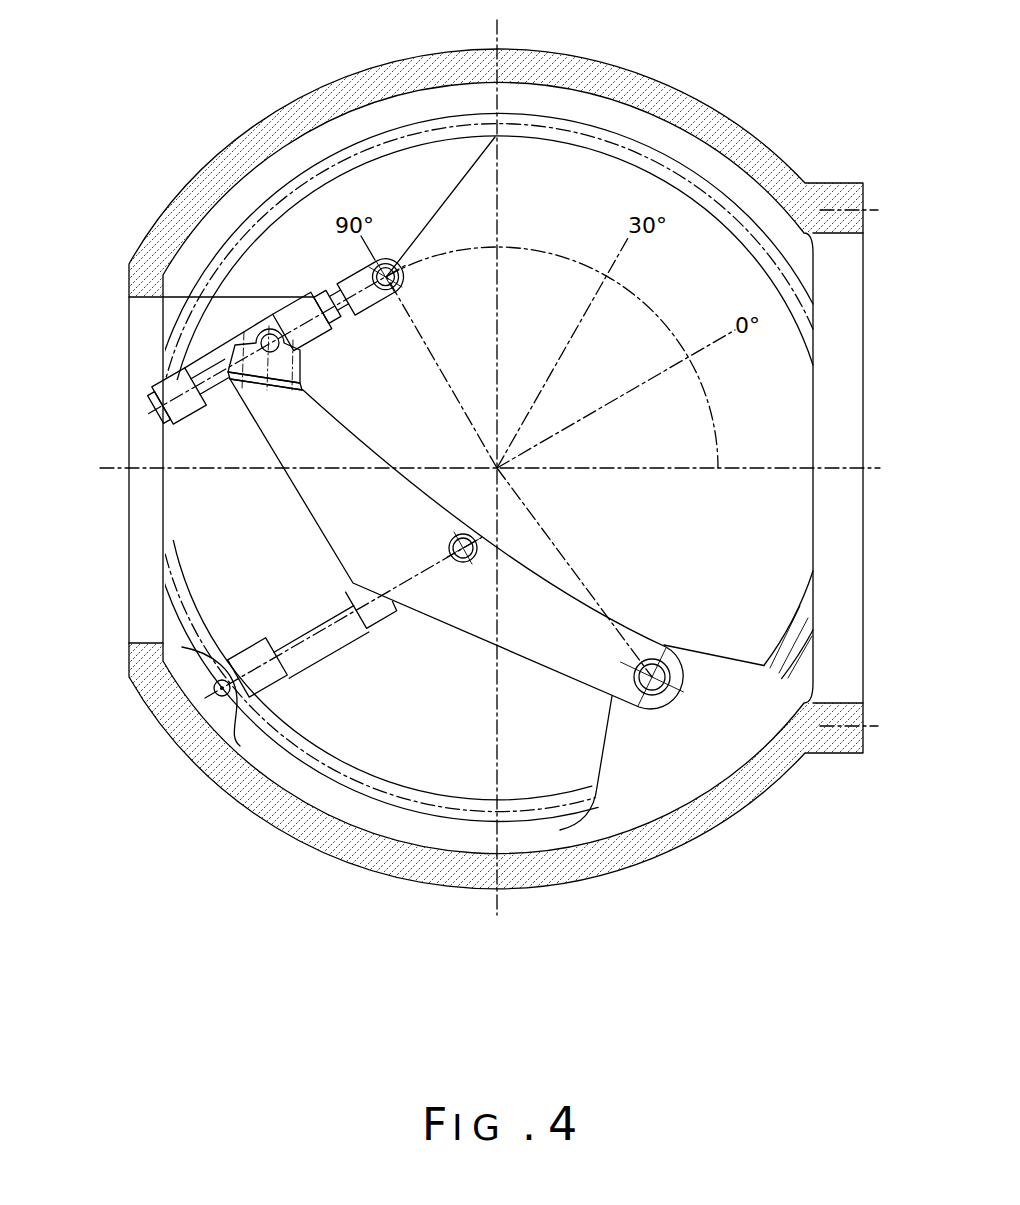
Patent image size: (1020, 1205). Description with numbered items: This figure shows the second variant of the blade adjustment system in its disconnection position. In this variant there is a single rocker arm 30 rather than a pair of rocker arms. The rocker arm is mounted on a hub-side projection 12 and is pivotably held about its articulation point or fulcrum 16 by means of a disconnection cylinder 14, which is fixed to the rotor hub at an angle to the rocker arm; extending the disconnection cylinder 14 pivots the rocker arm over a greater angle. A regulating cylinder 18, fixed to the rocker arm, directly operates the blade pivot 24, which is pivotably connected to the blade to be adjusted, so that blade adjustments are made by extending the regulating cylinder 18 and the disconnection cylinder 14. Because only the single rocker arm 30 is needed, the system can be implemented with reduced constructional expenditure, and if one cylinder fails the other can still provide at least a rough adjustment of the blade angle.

The hub-side projection 12 is at (698, 743).
The disconnection cylinder 14 is at (253, 657).
The articulation point or fulcrum 16 is at (682, 674).
The regulating cylinder 18 is at (163, 385).
The blade pivot 24 is at (392, 268).
The single rocker arm 30 is at (563, 650).